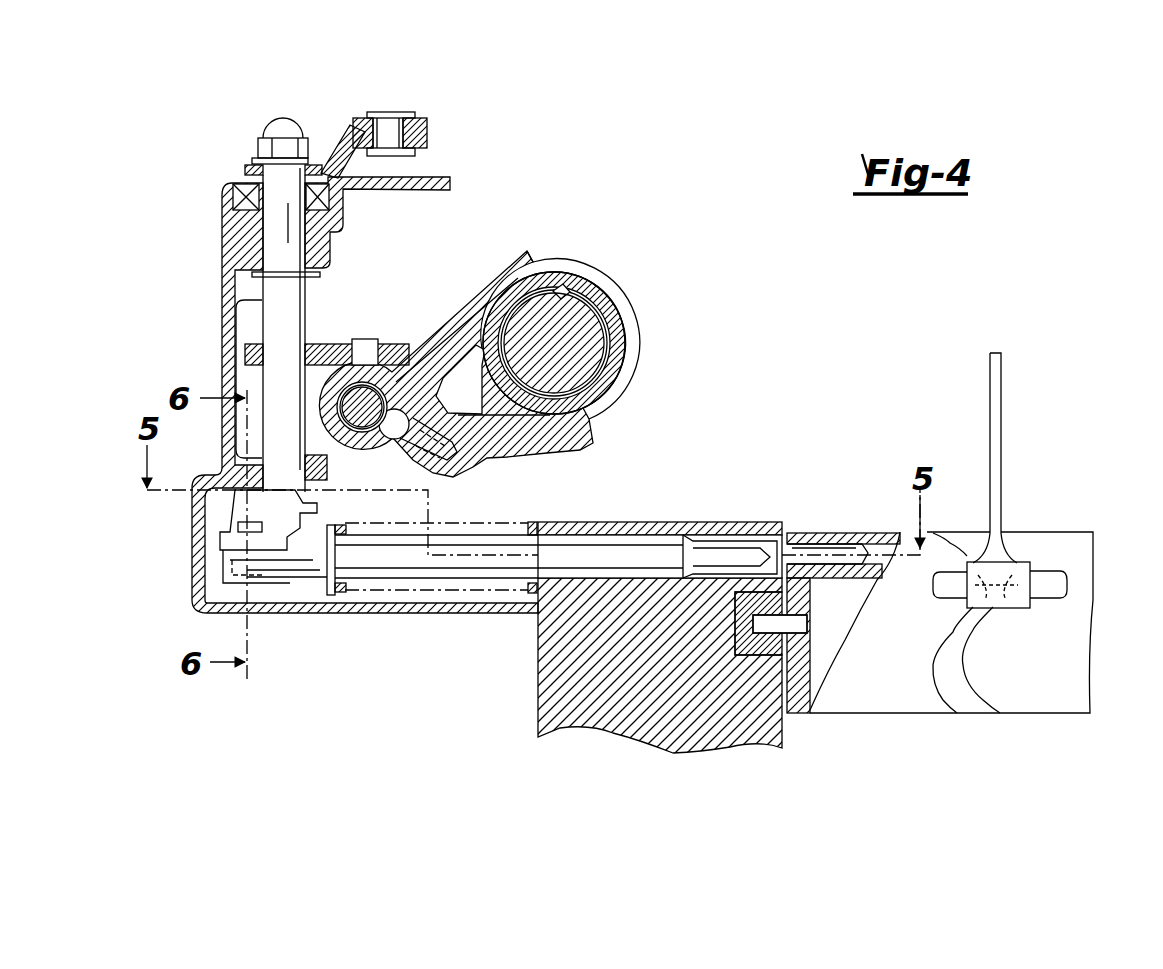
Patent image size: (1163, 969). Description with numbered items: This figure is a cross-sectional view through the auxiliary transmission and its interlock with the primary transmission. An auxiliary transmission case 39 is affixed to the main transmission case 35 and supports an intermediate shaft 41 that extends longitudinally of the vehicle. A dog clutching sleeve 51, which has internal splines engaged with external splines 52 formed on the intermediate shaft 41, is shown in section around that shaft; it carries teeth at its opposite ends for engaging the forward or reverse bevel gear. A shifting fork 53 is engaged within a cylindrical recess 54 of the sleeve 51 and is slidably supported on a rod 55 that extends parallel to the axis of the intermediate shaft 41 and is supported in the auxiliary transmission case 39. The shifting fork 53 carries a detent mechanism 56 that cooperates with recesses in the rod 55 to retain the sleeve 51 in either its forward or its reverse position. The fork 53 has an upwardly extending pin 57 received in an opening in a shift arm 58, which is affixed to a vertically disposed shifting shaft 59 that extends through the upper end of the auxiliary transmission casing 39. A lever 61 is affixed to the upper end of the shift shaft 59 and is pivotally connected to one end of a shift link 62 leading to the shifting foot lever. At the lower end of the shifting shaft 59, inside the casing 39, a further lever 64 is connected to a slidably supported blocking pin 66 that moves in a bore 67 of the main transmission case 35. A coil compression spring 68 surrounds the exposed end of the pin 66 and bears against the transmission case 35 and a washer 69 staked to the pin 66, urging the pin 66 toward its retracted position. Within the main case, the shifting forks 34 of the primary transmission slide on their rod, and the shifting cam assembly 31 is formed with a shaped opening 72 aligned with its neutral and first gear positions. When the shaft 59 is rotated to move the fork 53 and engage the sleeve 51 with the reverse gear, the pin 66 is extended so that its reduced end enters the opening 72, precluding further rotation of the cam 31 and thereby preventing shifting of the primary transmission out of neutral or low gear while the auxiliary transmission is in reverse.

The shifting cam assembly 31 is at (1060, 532).
The shifting forks 34 is at (1002, 380).
The main transmission case 35 is at (752, 520).
The auxiliary transmission case 39 is at (221, 251).
The intermediate shaft 41 is at (583, 362).
The dog clutching sleeve 51 is at (626, 303).
The external splines 52 is at (590, 300).
The shifting fork 53 is at (493, 266).
The cylindrical recess 54 is at (565, 290).
The rod 55 is at (358, 382).
The detent mechanism 56 is at (396, 432).
The upwardly extending pin 57 is at (368, 339).
The shift arm 58 is at (410, 347).
The shifting shaft 59 is at (260, 305).
The lever 61 is at (352, 126).
The shift link 62 is at (428, 119).
The further lever 64 is at (232, 515).
The blocking pin 66 is at (302, 585).
The bore 67 is at (573, 540).
The coil compression spring 68 is at (343, 587).
The washer 69 is at (334, 598).
The opening 72 is at (845, 548).